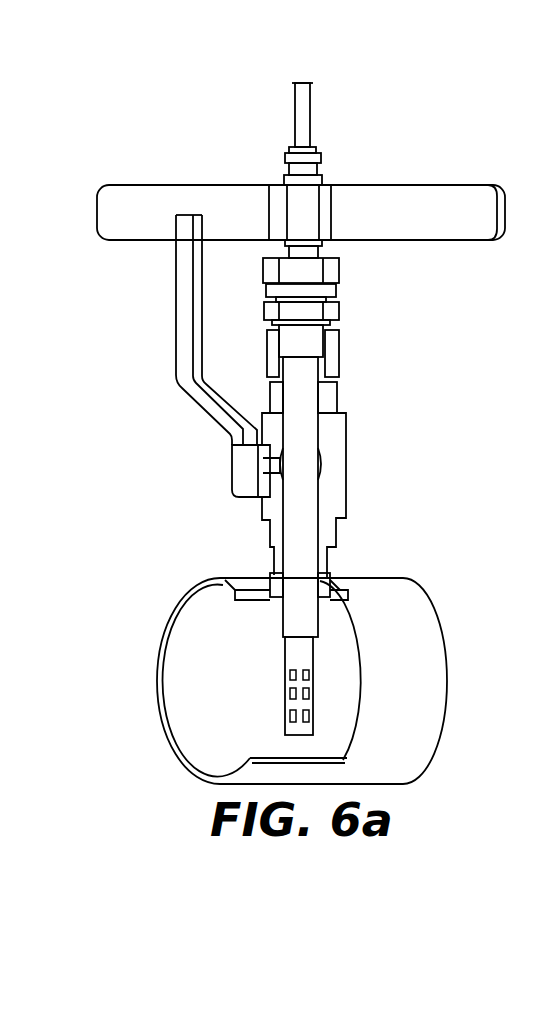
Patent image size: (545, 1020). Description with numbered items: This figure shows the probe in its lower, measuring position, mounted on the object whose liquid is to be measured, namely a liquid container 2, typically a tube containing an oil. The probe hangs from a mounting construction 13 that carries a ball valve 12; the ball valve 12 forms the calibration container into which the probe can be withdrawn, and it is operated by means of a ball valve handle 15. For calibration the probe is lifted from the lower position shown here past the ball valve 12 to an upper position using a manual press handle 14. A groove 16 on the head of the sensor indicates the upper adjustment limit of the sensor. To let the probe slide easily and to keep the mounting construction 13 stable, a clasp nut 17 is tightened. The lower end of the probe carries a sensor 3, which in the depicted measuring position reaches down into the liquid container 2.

The liquid container 2 is at (165, 585).
The sensor 3 is at (285, 701).
The ball valve 12 is at (247, 467).
The mounting construction 13 is at (362, 468).
The press handle 14 is at (163, 200).
The ball valve handle 15 is at (170, 385).
The groove 16 is at (338, 587).
The clasp nut 17 is at (339, 346).